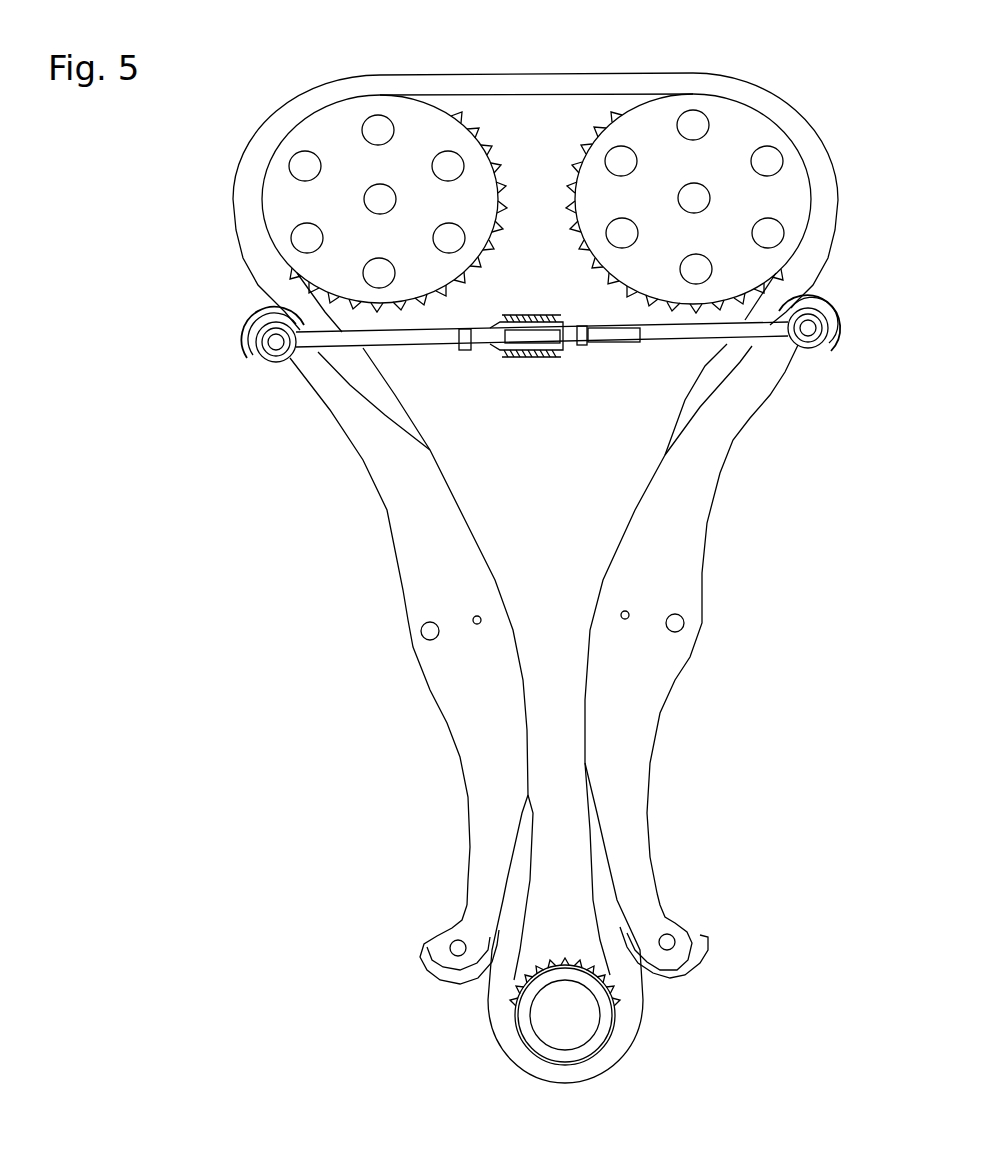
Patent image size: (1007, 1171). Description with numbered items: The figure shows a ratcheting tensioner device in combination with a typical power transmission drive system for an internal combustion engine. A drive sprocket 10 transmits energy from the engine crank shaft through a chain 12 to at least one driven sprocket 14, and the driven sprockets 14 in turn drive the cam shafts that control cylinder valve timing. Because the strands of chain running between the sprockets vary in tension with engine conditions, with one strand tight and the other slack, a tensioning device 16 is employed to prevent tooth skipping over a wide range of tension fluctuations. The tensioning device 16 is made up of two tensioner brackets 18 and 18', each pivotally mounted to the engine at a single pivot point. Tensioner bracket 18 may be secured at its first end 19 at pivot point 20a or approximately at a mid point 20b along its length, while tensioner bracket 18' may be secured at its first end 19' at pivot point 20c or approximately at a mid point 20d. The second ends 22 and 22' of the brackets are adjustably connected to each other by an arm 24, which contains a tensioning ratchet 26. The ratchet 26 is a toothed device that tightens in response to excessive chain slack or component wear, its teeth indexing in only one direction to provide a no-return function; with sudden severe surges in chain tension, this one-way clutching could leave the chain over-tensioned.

The crankshaft sprocket 10 is at (577, 1013).
The chain 12 is at (613, 80).
The driven sprocket 14 is at (352, 148).
The tensioning device 16 is at (305, 571).
The tensioner bracket 18 is at (691, 619).
The tensioner bracket 18' is at (405, 631).
The first end 19 is at (677, 925).
The first end 19' is at (436, 922).
The pivot point 20a is at (670, 945).
The pivot point 20b is at (678, 626).
The pivot point 20c is at (455, 947).
The pivot point 20d is at (430, 631).
The second end 22 is at (819, 364).
The second end 22' is at (254, 375).
The arm 24 is at (447, 340).
The tensioning ratchet 26 is at (540, 362).